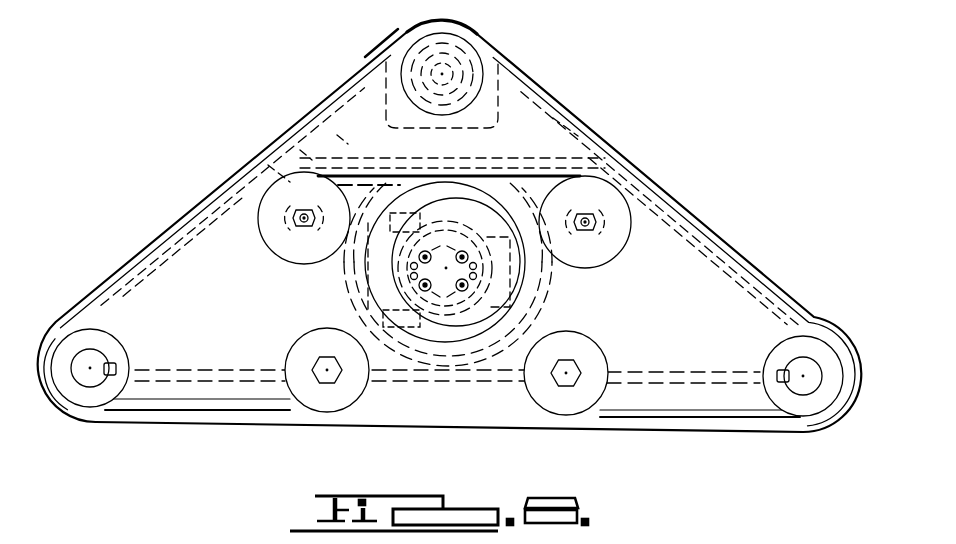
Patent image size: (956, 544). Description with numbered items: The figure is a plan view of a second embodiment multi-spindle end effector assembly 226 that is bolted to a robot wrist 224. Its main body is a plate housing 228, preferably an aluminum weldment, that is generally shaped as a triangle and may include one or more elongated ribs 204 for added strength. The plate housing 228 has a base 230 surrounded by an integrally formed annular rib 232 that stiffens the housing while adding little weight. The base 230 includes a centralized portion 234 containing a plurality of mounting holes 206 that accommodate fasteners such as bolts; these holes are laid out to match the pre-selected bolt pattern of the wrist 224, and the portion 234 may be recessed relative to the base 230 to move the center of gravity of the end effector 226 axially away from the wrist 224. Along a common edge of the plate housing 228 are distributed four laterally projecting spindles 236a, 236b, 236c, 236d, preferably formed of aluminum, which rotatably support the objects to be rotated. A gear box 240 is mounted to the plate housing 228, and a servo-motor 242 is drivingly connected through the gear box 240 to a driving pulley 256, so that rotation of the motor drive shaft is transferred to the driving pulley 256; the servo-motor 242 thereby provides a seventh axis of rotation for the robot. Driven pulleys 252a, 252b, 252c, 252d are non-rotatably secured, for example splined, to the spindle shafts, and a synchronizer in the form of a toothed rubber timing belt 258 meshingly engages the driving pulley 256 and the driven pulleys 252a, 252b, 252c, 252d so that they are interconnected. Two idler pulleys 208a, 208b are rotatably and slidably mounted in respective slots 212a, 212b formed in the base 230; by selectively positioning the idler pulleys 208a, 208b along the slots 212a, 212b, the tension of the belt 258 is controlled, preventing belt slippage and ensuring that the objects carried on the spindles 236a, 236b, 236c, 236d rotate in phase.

The elongated ribs 204 is at (356, 165).
The mounting holes 206 is at (453, 335).
The idler pulley 208a is at (265, 197).
The idler pulley 208b is at (625, 212).
The slot 212a is at (296, 224).
The slot 212b is at (594, 229).
The wrist 224 is at (400, 202).
The end effector assembly 226 is at (703, 148).
The plate housing 228 is at (705, 281).
The base 230 is at (767, 316).
The annular rib 232 is at (803, 310).
The centralized portion 234 is at (507, 196).
The spindle 236a is at (93, 382).
The spindle 236b is at (308, 343).
The spindle 236c is at (562, 389).
The spindle 236d is at (793, 364).
The gear box 240 is at (548, 78).
The servo-motor 242 is at (476, 54).
The driven pulley 252a is at (63, 350).
The driven pulley 252b is at (330, 392).
The driven pulley 252c is at (597, 364).
The driven pulley 252d is at (810, 410).
The driving pulley 256 is at (413, 47).
The timing belt 258 is at (167, 408).